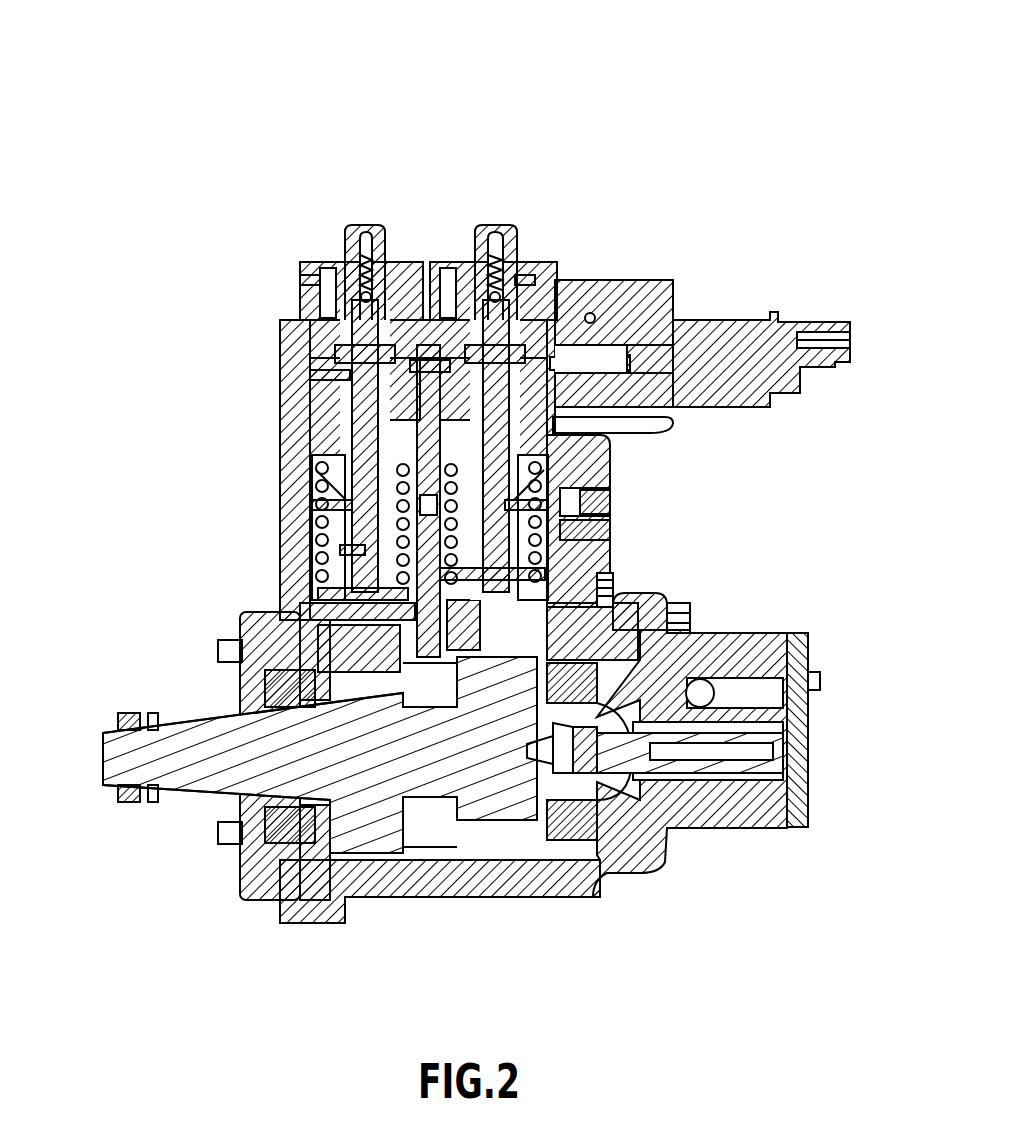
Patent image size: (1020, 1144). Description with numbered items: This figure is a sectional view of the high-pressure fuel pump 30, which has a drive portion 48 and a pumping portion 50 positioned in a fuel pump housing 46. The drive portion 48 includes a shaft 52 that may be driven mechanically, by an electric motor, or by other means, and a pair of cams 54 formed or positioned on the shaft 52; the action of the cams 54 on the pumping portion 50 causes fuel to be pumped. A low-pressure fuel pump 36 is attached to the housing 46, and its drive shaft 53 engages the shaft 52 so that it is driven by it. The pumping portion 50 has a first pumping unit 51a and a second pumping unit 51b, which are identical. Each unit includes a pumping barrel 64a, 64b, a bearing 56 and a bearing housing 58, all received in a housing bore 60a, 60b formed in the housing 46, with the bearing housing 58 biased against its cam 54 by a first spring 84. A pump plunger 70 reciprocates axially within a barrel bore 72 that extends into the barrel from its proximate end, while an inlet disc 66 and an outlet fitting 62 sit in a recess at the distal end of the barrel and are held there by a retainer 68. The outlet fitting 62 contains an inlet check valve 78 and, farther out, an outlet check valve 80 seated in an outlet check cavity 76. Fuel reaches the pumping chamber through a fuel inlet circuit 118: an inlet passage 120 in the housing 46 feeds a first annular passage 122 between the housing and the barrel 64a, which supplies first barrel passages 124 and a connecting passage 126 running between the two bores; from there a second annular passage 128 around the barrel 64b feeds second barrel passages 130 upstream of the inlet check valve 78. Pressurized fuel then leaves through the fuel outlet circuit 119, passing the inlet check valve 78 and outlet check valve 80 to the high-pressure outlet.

The fuel pump 30 is at (280, 100).
The low-pressure fuel pump 36 is at (785, 633).
The fuel pump housing 46 is at (290, 505).
The drive portion 48 is at (695, 860).
The pumping portion 50 is at (262, 370).
The first pumping unit 51a is at (532, 200).
The second pumping unit 51b is at (342, 248).
The shaft 52 is at (210, 738).
The drive shaft 53 is at (720, 790).
The cams 54 is at (380, 897).
The bearing 56 is at (330, 596).
The bearing housing 58 is at (245, 652).
The housing bore 60a is at (605, 492).
The housing bore 60b is at (315, 515).
The outlet fitting 62 is at (312, 278).
The pumping barrel 64a is at (618, 420).
The pumping barrel 64b is at (330, 440).
The inlet disc 66 is at (350, 387).
The retainer 68 is at (303, 262).
The pump plunger 70 is at (360, 455).
The barrel bore 72 is at (335, 472).
The outlet check valve cavity 76 is at (360, 222).
The inlet check valve 78 is at (305, 300).
The outlet check valve 80 is at (352, 252).
The first spring 84 is at (330, 560).
The fuel inlet circuit 118 is at (648, 302).
The fuel outlet circuit 119 is at (286, 238).
The inlet passage 120 is at (610, 330).
The first annular passage 122 is at (447, 325).
The first barrel passages 124 is at (583, 343).
The connecting passage 126 is at (432, 345).
The second annular passage 128 is at (330, 375).
The second barrel passages 130 is at (345, 355).